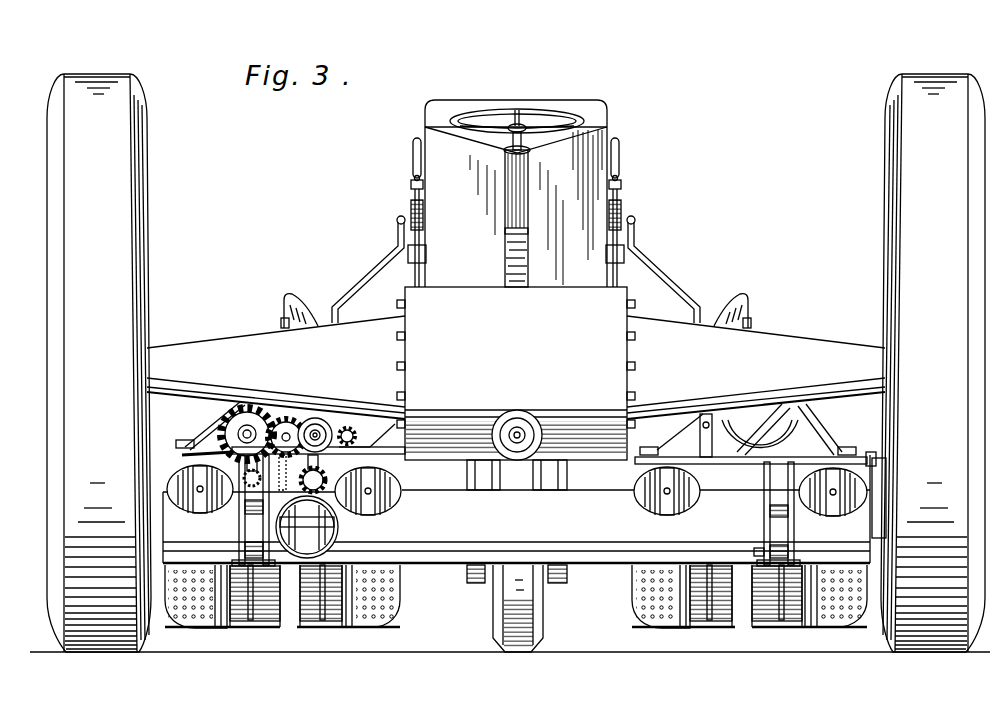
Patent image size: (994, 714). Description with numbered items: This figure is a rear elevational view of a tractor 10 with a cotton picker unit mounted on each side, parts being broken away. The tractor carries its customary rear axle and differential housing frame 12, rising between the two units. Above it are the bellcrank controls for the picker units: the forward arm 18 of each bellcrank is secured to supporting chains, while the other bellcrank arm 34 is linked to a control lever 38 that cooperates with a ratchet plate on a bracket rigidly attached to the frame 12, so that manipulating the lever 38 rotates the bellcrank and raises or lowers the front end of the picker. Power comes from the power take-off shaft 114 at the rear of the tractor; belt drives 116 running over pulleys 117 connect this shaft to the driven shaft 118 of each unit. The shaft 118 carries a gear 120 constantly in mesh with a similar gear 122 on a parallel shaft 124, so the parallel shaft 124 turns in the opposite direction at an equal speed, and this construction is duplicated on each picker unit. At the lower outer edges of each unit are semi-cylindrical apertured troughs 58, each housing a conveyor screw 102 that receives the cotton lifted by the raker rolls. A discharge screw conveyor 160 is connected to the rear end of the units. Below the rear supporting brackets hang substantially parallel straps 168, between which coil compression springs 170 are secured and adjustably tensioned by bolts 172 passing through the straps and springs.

The tractor 10 is at (614, 120).
The rear axle and differential housing frame 12 is at (614, 353).
The forward arm of bellcrank 18 is at (298, 322).
The bellcrank arm 34 is at (361, 285).
The control lever 38 is at (413, 158).
The semi-cylindrical bottom casing member or trough 58 is at (400, 506).
The conveyor screw 102 is at (388, 492).
The power take-off shaft 114 is at (519, 426).
The belt drive 116 is at (447, 408).
The pulley 117 is at (400, 398).
The driven shaft 118 is at (315, 416).
The gear 120 is at (285, 416).
The gear 122 is at (248, 408).
The parallel shaft 124 is at (238, 434).
The discharge screw conveyor 160 is at (448, 553).
The strap 168 is at (264, 512).
The coil compression spring 170 is at (794, 512).
The bolt 172 is at (756, 551).